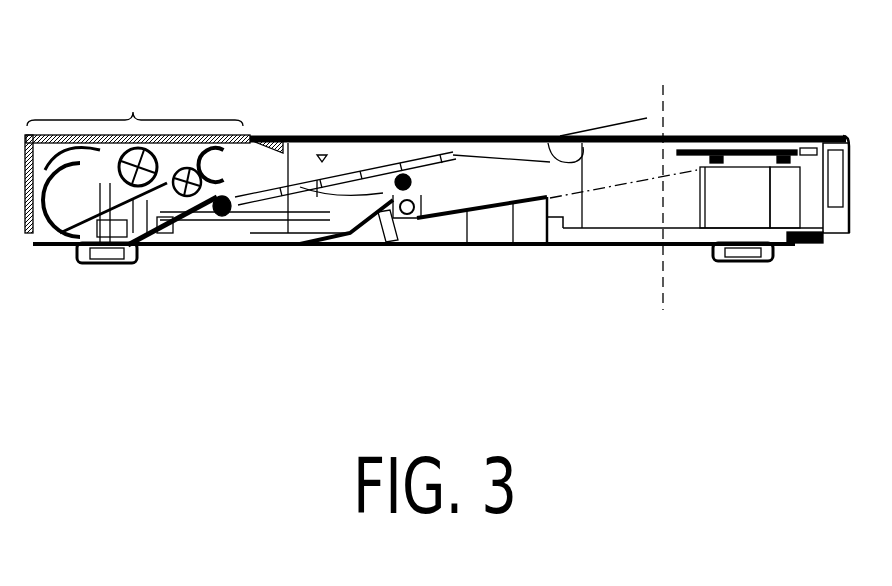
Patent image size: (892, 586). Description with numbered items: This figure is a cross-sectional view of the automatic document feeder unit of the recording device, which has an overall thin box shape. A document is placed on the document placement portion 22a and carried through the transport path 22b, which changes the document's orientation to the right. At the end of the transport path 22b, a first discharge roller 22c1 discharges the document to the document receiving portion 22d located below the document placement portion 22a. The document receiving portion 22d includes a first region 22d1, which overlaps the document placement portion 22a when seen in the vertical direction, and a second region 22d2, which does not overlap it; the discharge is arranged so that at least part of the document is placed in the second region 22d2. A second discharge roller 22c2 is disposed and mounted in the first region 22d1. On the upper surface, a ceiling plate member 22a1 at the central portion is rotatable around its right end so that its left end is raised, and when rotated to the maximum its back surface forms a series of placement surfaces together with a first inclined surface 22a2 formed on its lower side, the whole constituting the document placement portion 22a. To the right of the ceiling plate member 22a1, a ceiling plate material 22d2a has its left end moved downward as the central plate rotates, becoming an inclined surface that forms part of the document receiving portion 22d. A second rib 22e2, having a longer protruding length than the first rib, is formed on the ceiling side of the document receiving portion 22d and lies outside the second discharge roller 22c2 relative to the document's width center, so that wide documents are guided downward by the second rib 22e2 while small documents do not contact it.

The transport path 22b is at (177, 163).
The first discharge roller 22c1 is at (240, 195).
The second discharge roller 22c2 is at (360, 185).
The document placement portion 22a is at (592, 132).
The ceiling plate member 22a1 is at (413, 135).
The first inclined surface 22a2 is at (372, 178).
The document receiving portion 22d is at (697, 136).
The first region 22d1 is at (658, 270).
The second region 22d2 is at (818, 270).
The ceiling plate material 22d2a is at (643, 137).
The second rib 22e2 is at (250, 247).